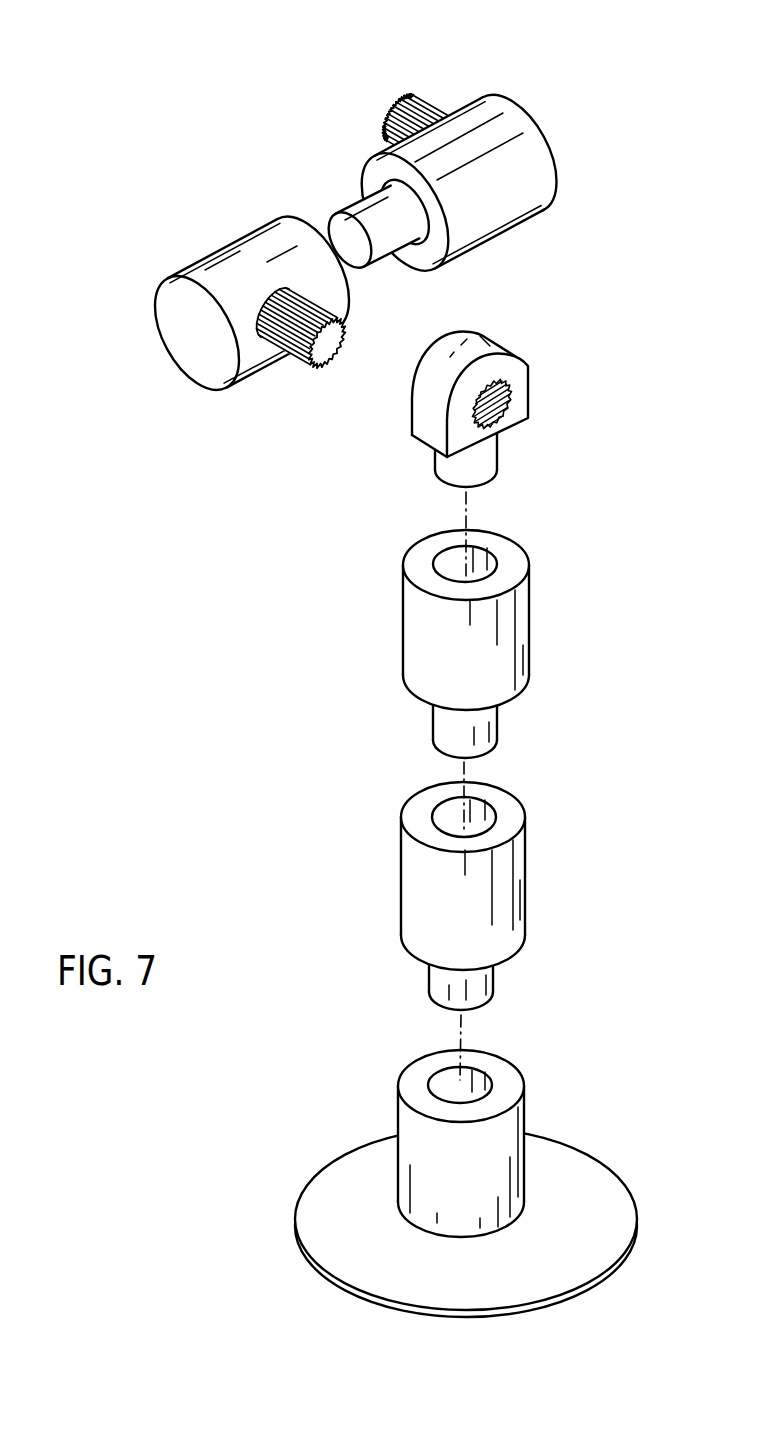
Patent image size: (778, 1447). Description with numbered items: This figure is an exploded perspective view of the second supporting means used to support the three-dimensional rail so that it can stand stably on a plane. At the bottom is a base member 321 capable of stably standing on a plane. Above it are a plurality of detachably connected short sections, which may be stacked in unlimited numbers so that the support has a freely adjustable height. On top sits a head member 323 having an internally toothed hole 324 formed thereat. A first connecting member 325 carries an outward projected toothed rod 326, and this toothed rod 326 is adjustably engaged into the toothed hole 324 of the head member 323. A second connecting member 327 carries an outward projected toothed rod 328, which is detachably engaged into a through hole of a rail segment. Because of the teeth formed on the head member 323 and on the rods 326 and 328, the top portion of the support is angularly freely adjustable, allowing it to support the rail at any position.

The base member 321 is at (558, 1150).
The head member 323 is at (524, 404).
The internally toothed hole 324 is at (513, 413).
The first connecting member 325 is at (230, 242).
The toothed rod 326 is at (290, 365).
The second connecting member 327 is at (537, 152).
The toothed rod 328 is at (412, 92).